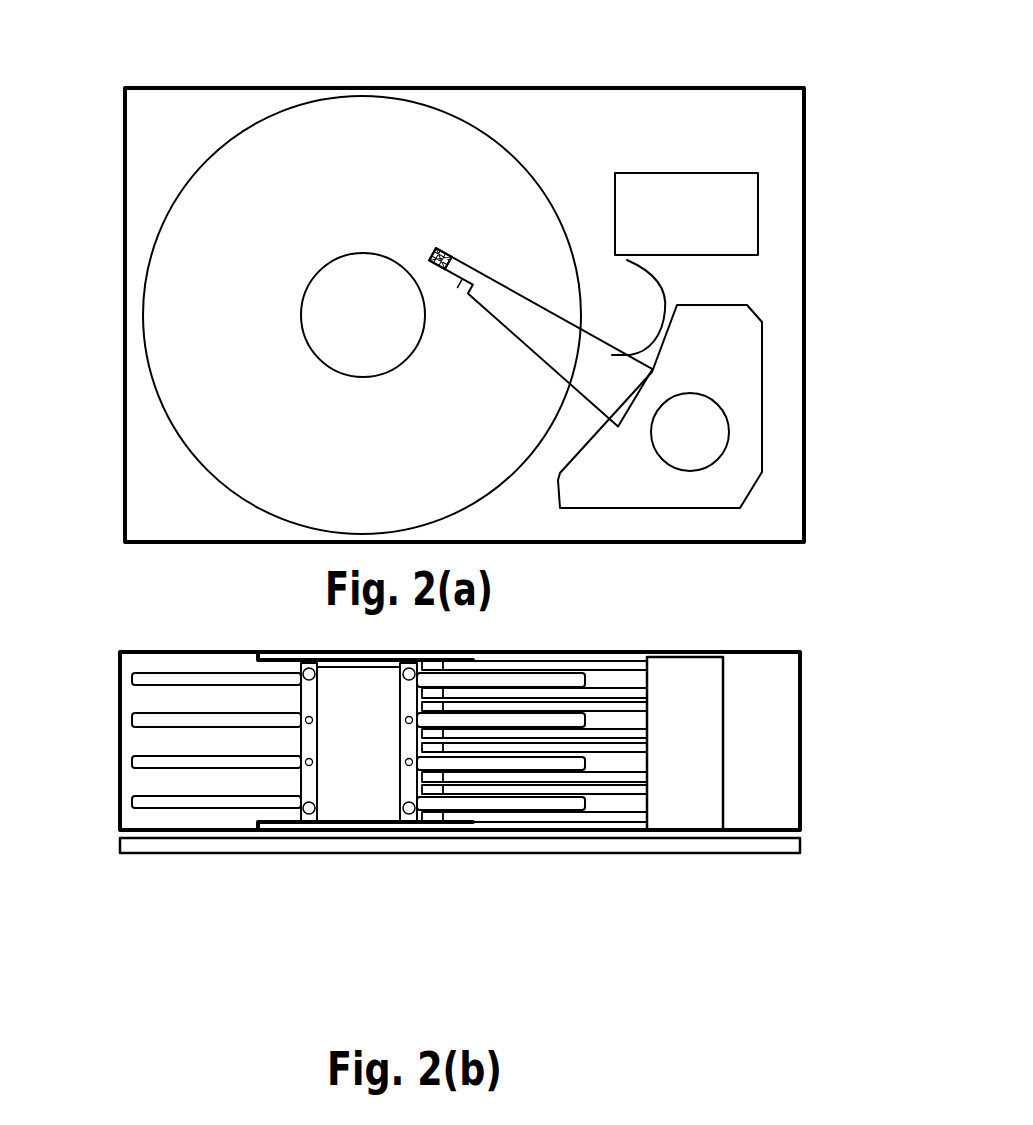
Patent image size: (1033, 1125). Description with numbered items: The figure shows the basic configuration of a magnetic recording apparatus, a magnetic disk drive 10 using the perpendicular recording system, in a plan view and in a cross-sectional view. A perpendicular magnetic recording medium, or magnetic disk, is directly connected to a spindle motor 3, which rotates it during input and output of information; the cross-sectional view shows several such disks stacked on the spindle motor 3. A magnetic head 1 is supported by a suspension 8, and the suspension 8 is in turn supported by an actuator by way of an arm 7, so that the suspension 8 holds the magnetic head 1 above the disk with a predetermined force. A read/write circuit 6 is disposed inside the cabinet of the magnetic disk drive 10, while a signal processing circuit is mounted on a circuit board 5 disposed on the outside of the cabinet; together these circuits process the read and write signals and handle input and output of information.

The magnetic recording apparatus 10 is at (130, 60).
The magnetic head 1 is at (441, 255).
The spindle motor 3 is at (343, 803).
The circuit board 5 is at (708, 853).
The read/write circuit 6 is at (733, 217).
The arm 7 is at (550, 347).
The suspension 8 is at (458, 283).